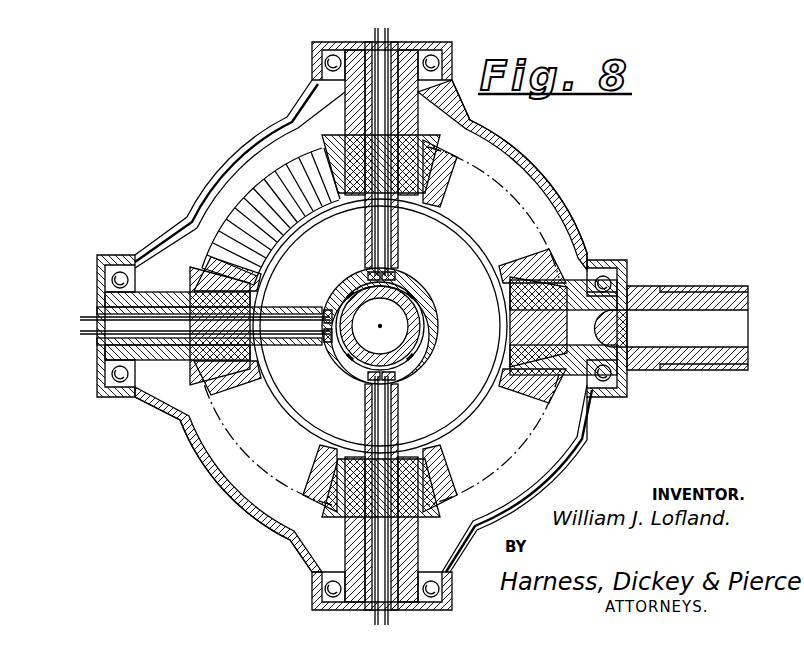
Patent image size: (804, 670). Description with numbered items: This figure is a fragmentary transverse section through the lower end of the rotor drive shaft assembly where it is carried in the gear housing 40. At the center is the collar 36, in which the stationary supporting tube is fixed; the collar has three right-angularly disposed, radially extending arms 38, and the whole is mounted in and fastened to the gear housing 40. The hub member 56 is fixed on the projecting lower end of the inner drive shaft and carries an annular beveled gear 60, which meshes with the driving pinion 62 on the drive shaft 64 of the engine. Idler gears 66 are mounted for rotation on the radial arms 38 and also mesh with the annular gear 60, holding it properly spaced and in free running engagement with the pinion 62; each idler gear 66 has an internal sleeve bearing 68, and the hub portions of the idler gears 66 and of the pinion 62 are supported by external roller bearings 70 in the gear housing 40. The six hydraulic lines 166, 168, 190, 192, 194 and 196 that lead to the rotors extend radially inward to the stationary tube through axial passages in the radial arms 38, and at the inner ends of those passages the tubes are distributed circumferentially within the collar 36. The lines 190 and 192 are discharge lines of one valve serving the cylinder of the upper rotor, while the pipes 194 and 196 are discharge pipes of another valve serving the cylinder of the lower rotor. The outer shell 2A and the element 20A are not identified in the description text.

The housing 2A is at (165, 232).
The gear housing 40 is at (215, 172).
The external roller bearings 70 is at (337, 58).
The internal sleeve bearing 68 is at (350, 126).
The idler gears 66 is at (325, 140).
The driving pinion 62 is at (536, 280).
The annular beveled gear 60 is at (248, 220).
The hub member 56 is at (327, 280).
The radial arms 38 is at (97, 311).
The collar 36 is at (428, 298).
The lamination bundle 20A is at (420, 214).
The hydraulic line 166 is at (388, 28).
The hydraulic line 168 is at (375, 30).
The discharge pipe 194 is at (374, 617).
The discharge pipe 196 is at (388, 616).
The discharge line 190 is at (82, 320).
The discharge line 192 is at (82, 334).
The drive shaft 64 is at (672, 302).